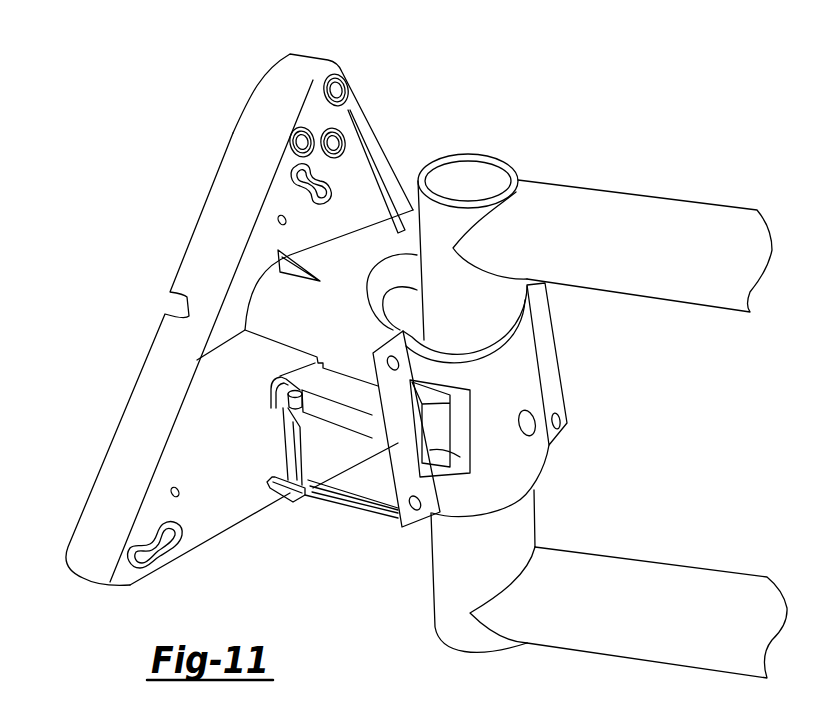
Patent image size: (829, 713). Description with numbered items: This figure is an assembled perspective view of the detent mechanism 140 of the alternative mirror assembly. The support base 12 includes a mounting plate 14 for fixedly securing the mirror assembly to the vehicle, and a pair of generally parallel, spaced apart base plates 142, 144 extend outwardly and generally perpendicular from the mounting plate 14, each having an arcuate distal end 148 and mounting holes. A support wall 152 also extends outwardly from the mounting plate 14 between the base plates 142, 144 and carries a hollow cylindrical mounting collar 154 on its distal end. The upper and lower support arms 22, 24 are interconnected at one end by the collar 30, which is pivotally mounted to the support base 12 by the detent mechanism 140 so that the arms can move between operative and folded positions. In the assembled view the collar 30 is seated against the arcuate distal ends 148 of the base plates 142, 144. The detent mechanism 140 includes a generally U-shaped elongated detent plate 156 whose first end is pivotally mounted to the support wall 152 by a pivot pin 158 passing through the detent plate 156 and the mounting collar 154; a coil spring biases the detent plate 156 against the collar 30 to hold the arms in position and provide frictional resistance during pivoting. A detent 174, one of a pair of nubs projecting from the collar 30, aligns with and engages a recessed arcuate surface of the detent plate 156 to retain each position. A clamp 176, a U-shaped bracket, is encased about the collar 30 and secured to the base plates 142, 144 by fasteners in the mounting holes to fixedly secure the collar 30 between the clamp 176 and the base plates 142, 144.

The support base 12 is at (239, 293).
The mounting plate 14 is at (210, 248).
The upper support arm 22 is at (596, 204).
The lower support arm 24 is at (675, 593).
The collar 30 is at (517, 528).
The detent mechanism 140 is at (318, 441).
The base plate 142 is at (340, 262).
The base plate 144 is at (364, 498).
The arcuate distal end 148 is at (376, 314).
The support wall 152 is at (248, 457).
The mounting collar 154 is at (277, 450).
The detent plate 156 is at (313, 455).
The pivot pin 158 is at (282, 388).
The detent 174 is at (433, 449).
The clamp 176 is at (516, 405).